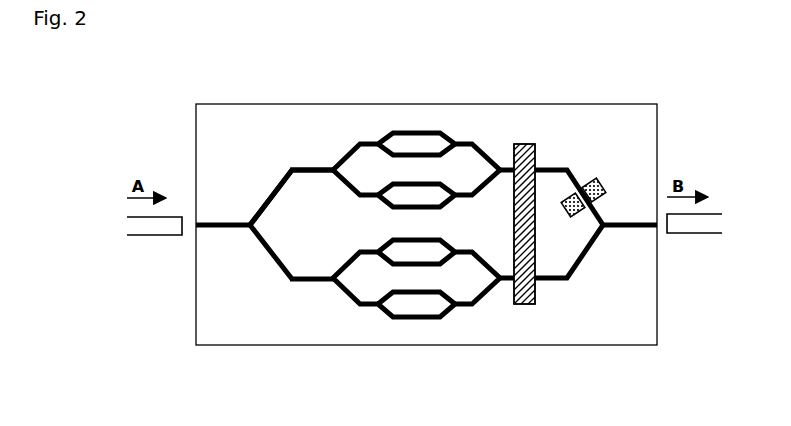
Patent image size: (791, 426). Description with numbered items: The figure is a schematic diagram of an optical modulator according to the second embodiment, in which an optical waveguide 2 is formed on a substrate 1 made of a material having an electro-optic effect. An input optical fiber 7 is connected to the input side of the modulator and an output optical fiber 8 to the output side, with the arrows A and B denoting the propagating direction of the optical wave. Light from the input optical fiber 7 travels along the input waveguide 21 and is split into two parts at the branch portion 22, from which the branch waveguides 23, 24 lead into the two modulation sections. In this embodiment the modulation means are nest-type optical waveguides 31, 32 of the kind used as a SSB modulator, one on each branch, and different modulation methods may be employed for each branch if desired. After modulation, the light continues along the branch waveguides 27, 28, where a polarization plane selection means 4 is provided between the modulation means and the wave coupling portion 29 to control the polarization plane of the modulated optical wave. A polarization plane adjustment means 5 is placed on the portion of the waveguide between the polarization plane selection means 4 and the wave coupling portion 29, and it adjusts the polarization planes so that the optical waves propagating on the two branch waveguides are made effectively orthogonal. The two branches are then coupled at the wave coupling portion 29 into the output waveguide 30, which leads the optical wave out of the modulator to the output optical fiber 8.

The substrate 1 is at (577, 130).
The optical waveguide 2 is at (284, 157).
The polarization plane selection means 4 is at (522, 144).
The polarization plane adjustment means 5 is at (598, 178).
The input optical fiber 7 is at (153, 225).
The output optical fiber 8 is at (692, 224).
The input waveguide 21 is at (220, 225).
The branch portion 22 is at (250, 224).
The branch waveguide 23 is at (315, 170).
The branch waveguide 24 is at (317, 279).
The branch waveguide 27 is at (505, 170).
The branch waveguide 28 is at (505, 278).
The wave coupling portion 29 is at (603, 225).
The output waveguide 30 is at (624, 224).
The nest-type optical waveguide 31 is at (419, 126).
The nest-type optical waveguide 32 is at (421, 328).